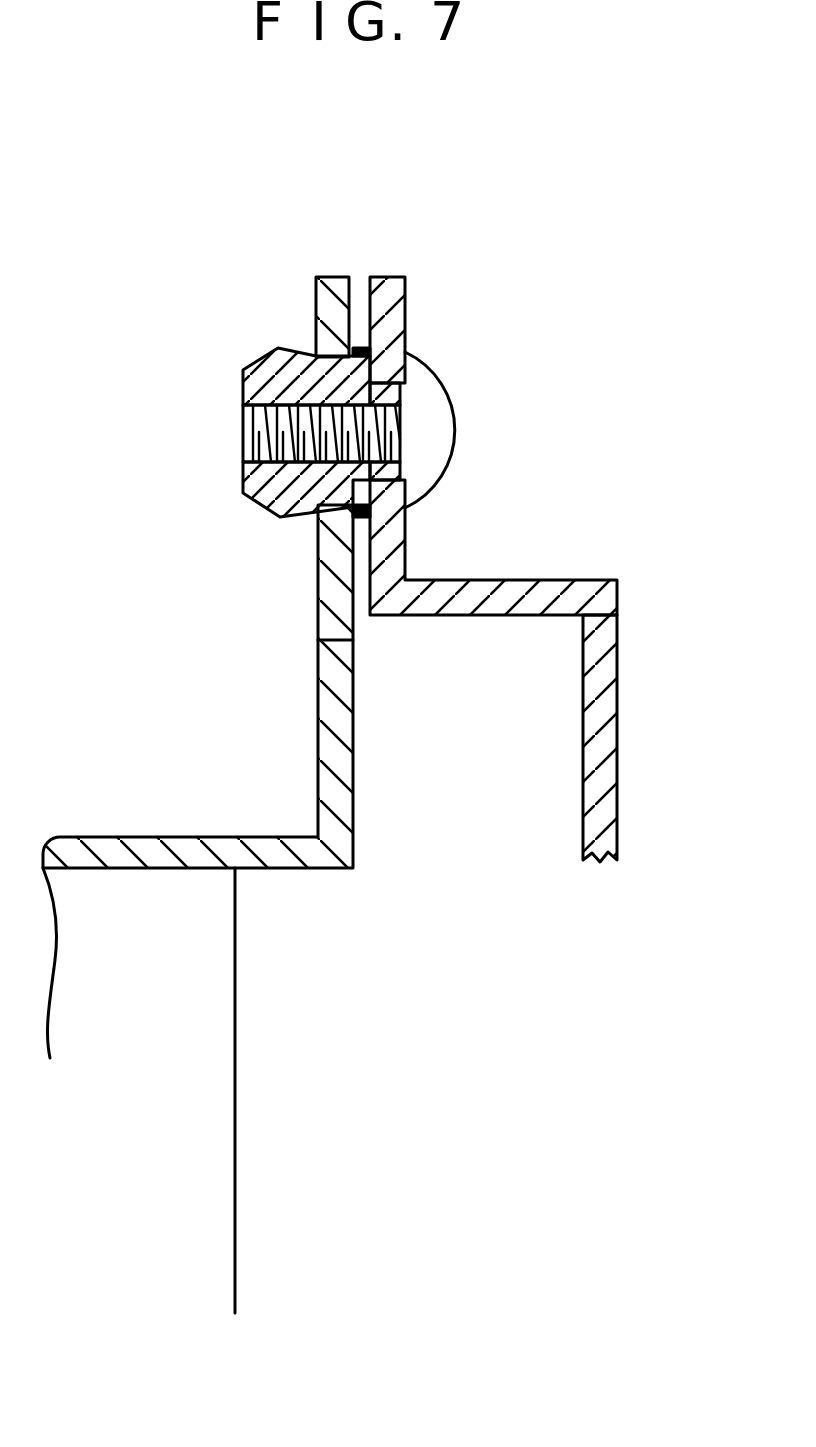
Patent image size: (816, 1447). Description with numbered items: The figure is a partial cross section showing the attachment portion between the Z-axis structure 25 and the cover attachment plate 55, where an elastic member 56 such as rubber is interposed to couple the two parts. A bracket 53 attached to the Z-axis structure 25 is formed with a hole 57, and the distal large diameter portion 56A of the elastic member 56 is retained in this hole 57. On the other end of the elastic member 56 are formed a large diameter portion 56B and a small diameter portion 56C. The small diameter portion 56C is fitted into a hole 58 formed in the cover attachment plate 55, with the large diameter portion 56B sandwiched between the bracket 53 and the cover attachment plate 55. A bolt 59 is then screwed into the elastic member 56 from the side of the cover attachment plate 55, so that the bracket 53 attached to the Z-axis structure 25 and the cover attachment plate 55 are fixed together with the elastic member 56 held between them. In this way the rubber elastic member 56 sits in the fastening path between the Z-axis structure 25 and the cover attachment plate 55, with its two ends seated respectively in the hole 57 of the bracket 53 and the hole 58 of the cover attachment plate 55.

The Z-axis structure 25 is at (207, 1183).
The bracket 53 is at (320, 718).
The cover attachment plate 55 is at (618, 793).
The elastic member 56 is at (257, 362).
The distal large diameter portion 56A is at (242, 390).
The large diameter portion 56B is at (337, 372).
The small diameter portion 56C is at (405, 353).
The hole 57 is at (317, 558).
The hole 58 is at (407, 520).
The bolt 59 is at (435, 428).